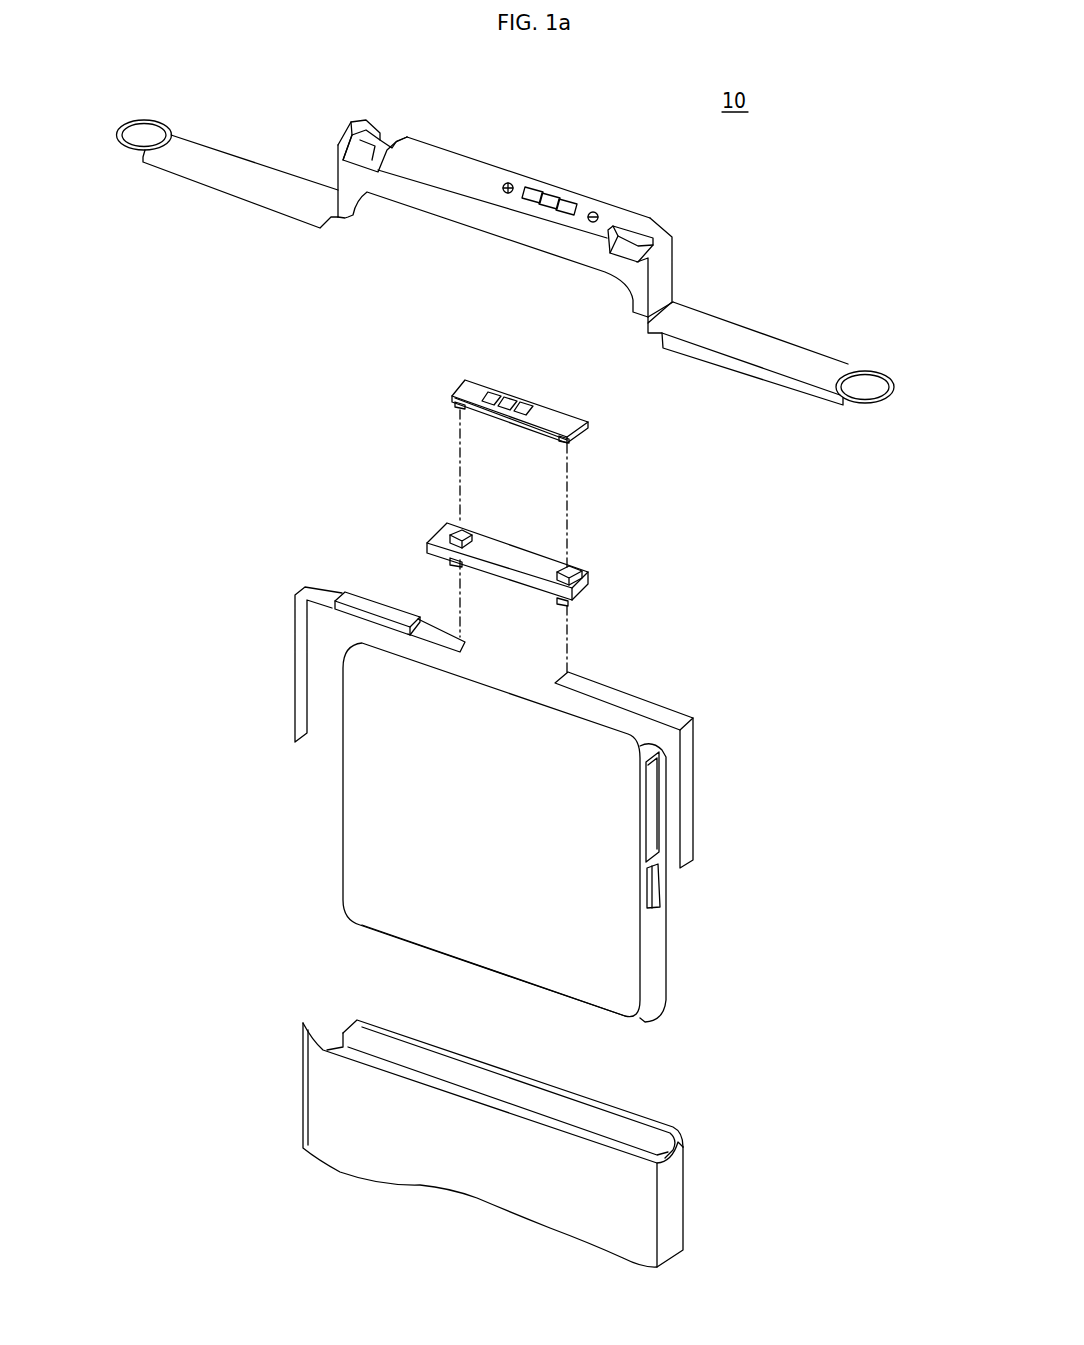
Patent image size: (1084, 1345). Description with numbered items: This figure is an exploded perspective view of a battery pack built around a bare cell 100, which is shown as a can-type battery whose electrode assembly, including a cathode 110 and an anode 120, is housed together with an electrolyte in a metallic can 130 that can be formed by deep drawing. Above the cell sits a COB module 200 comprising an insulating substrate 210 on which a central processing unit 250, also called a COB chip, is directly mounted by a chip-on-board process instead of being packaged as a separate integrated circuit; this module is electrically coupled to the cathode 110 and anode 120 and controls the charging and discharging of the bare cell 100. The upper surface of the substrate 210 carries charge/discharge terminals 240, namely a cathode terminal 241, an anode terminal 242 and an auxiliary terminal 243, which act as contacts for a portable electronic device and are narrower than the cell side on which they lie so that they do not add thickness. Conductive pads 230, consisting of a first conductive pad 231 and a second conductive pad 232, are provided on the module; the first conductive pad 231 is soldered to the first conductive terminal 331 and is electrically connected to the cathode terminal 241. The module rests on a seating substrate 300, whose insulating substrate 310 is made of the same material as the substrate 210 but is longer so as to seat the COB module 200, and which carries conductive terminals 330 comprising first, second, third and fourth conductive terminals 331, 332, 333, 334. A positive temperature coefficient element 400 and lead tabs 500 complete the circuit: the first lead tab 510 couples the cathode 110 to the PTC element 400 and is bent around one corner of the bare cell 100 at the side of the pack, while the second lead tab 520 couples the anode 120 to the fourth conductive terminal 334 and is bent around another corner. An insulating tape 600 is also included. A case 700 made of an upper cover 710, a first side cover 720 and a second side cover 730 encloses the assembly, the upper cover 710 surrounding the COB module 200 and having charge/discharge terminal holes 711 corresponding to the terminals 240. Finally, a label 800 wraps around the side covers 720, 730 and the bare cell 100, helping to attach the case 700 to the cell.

The bare cell 100 is at (672, 972).
The cathode 110 is at (340, 808).
The anode 120 is at (657, 887).
The can 130 is at (480, 943).
The COB module 200 is at (588, 432).
The insulating substrate 210 is at (578, 415).
The conductive pads 230 is at (543, 480).
The first conductive pad 231 is at (443, 423).
The second conductive pad 232 is at (549, 458).
The charge/discharge terminals 240 is at (596, 360).
The cathode terminal 241 is at (495, 393).
The anode terminal 242 is at (547, 407).
The auxiliary terminal 243 is at (523, 400).
The central processing unit 250 is at (502, 425).
The seating substrate 300 is at (598, 587).
The insulating substrate 310 is at (503, 553).
The conductive terminals 330 is at (582, 563).
The first conductive terminal 331 is at (447, 528).
The second conductive terminal 332 is at (580, 563).
The third conductive terminal 333 is at (455, 568).
The fourth conductive terminal 334 is at (562, 602).
The positive temperature coefficient element 400 is at (380, 590).
The lead tabs 500 is at (290, 698).
The first lead tab 510 is at (298, 653).
The second lead tab 520 is at (688, 793).
The insulating tape 600 is at (655, 830).
The case 700 is at (646, 212).
The upper cover 710 is at (432, 162).
The charge/discharge terminal holes 711 is at (568, 198).
The first side cover 720 is at (222, 158).
The second side cover 730 is at (763, 343).
The label 800 is at (705, 1173).